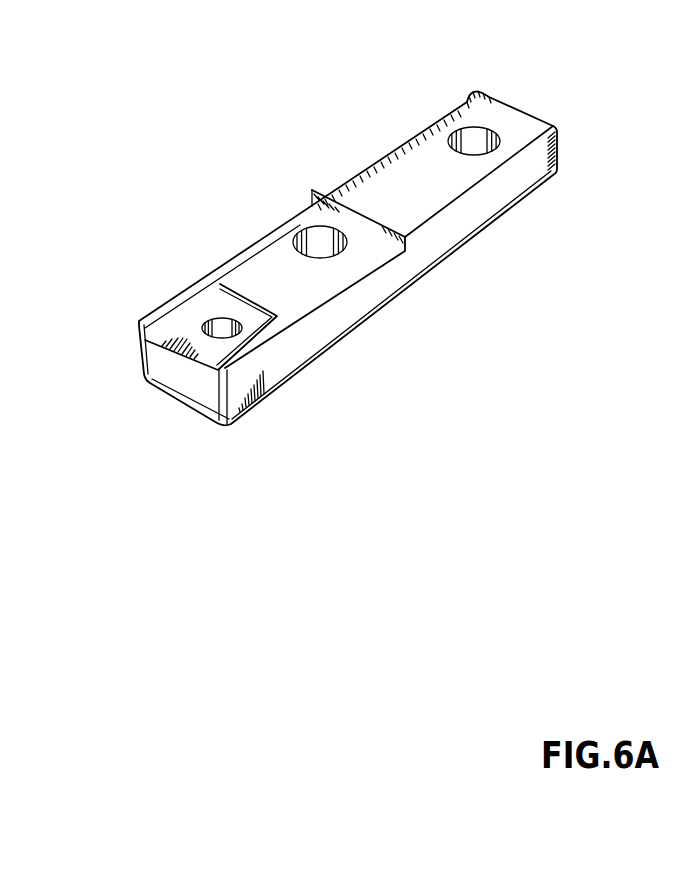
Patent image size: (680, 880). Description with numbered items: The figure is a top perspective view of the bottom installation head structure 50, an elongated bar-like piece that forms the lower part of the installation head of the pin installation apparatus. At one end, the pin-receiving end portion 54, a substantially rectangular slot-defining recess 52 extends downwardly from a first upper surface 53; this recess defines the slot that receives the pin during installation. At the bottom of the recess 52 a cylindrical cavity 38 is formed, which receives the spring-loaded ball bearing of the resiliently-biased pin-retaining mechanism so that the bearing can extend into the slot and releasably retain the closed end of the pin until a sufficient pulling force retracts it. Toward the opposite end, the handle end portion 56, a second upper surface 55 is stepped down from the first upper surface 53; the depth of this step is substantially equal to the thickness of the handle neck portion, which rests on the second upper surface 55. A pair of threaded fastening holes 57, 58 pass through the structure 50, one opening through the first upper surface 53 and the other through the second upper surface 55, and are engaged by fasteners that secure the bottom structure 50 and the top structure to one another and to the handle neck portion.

The first structure 50 is at (240, 177).
The cylindrical cavity 38 is at (220, 323).
The slot-defining recess 52 is at (190, 327).
The first upper surface 53 is at (333, 274).
The pin-receiving end portion 54 is at (180, 386).
The second upper surface 55 is at (451, 126).
The handle end portion 56 is at (534, 117).
The threaded fastening hole 57 is at (476, 144).
The threaded fastening hole 58 is at (318, 242).